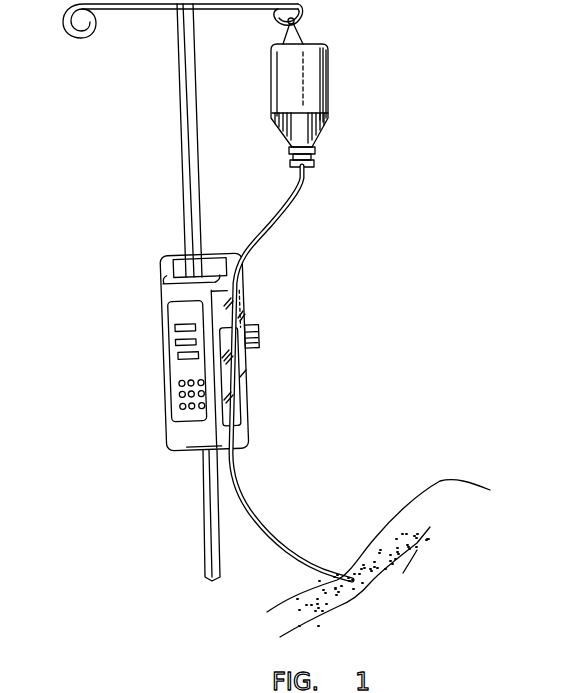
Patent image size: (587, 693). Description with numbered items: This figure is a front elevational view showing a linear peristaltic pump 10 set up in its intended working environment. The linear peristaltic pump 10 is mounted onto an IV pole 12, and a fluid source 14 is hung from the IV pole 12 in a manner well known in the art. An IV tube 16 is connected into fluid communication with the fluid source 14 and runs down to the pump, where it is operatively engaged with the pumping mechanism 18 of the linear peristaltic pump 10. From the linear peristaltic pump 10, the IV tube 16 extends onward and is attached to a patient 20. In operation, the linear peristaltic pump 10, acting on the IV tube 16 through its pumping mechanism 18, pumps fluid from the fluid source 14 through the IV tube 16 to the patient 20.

The linear peristaltic pump 10 is at (250, 350).
The IV pole 12 is at (186, 135).
The fluid source 14 is at (316, 80).
The IV tube 16 is at (293, 200).
The pumping mechanism 18 is at (236, 392).
The patient 20 is at (430, 500).